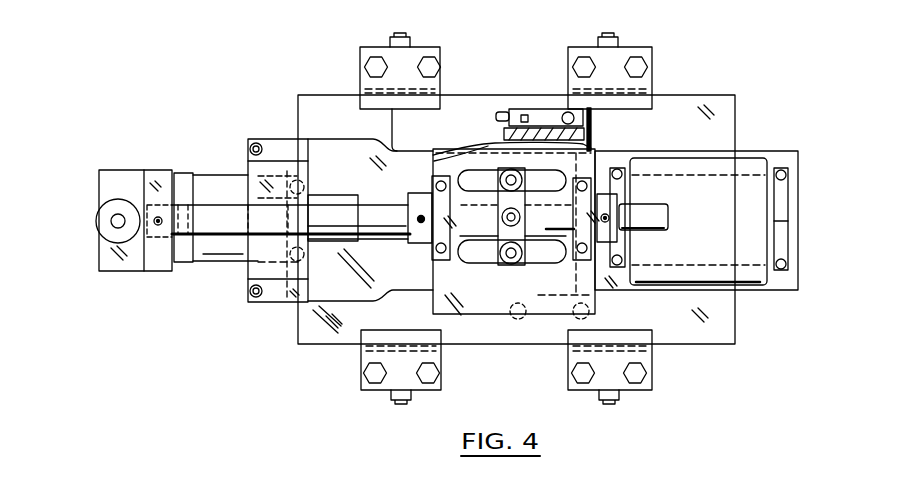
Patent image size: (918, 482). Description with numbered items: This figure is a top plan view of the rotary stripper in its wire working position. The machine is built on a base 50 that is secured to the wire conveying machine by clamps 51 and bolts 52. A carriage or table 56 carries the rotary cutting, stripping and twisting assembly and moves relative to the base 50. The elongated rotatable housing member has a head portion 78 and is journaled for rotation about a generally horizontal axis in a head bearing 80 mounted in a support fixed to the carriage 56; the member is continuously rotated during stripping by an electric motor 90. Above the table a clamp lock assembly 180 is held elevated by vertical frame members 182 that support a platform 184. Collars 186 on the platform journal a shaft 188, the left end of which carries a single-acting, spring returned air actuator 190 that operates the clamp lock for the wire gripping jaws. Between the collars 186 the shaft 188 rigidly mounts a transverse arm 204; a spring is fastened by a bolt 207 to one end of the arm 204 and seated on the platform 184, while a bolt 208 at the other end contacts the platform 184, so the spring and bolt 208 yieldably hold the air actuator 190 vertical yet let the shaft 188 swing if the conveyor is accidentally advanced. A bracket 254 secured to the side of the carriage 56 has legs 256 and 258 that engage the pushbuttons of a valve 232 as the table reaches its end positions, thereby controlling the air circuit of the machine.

The base 50 is at (729, 111).
The clamps 51 is at (433, 72).
The bolts 52 is at (421, 49).
The carriage or table 56 is at (314, 130).
The head portion 78 is at (204, 165).
The head bearing 80 is at (299, 183).
The electric motor 90 is at (742, 156).
The clamp lock assembly 180 is at (126, 162).
The vertical frame members 182 is at (583, 126).
The platform 184 is at (589, 300).
The collars 186 is at (406, 236).
The shaft 188 is at (662, 209).
The air actuator 190 is at (89, 212).
The arm 204 is at (505, 240).
The bolt 207 is at (512, 253).
The bolt 208 is at (493, 170).
The valve 232 is at (527, 101).
The bracket 254 is at (447, 143).
The bracket leg 256 is at (384, 118).
The bracket leg 258 is at (583, 114).